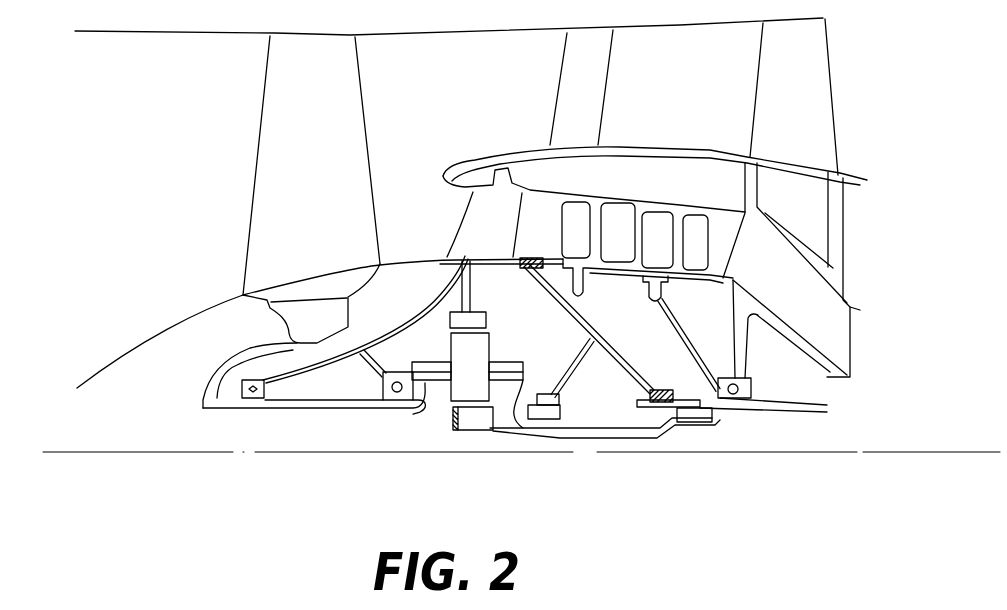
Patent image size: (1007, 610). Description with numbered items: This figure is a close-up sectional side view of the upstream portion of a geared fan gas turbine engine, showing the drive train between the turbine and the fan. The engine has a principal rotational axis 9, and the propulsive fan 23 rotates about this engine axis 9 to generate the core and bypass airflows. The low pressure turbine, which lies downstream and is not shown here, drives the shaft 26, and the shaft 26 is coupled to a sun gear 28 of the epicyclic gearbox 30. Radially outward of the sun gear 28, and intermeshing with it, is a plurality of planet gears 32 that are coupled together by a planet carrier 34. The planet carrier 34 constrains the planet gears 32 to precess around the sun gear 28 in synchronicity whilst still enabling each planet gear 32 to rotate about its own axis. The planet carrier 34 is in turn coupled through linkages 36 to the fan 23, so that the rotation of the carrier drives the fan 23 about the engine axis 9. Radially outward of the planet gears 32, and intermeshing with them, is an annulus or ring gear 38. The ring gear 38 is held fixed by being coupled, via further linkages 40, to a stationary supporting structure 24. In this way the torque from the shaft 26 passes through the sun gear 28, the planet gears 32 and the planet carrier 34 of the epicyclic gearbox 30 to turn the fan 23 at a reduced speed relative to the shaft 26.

The principal rotational axis 9 is at (213, 452).
The propulsive fan 23 is at (283, 206).
The stationary supporting structure 24 is at (480, 222).
The shaft 26 is at (723, 418).
The sun gear 28 is at (465, 431).
The epicyclic gearbox 30 is at (422, 402).
The planet gears 32 is at (447, 393).
The planet carrier 34 is at (516, 410).
The linkages 36 is at (402, 415).
The ring gear 38 is at (450, 320).
The linkages 40 is at (470, 283).